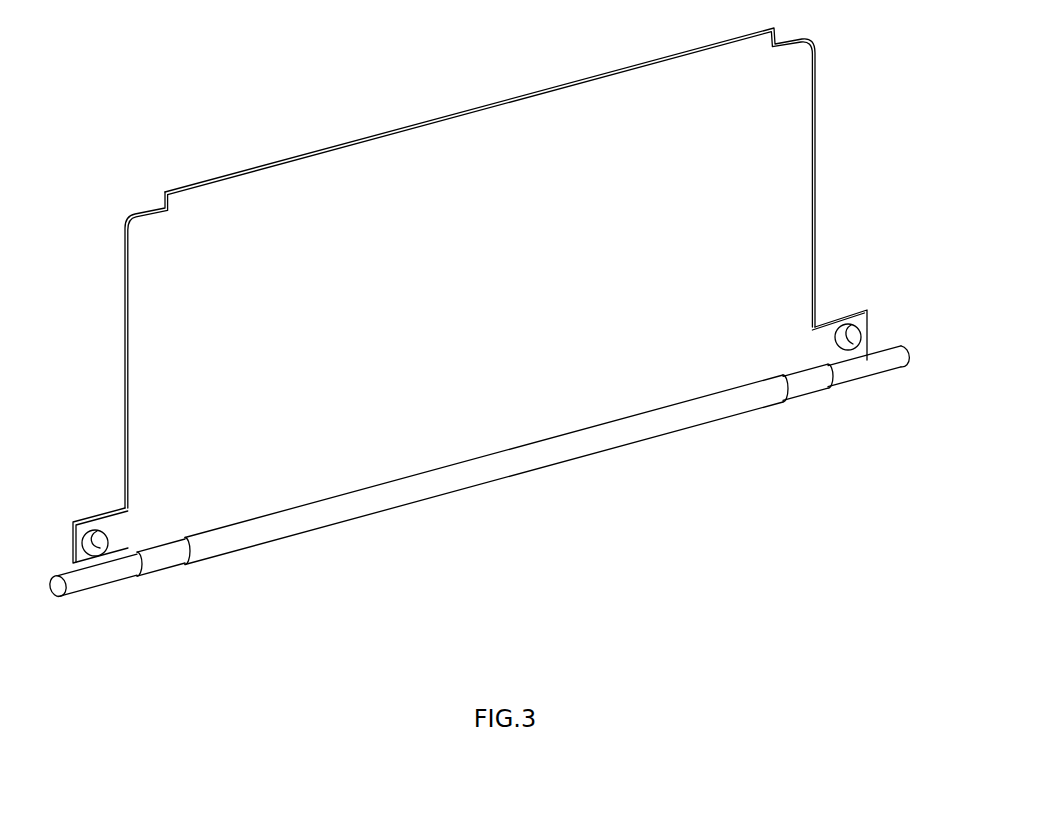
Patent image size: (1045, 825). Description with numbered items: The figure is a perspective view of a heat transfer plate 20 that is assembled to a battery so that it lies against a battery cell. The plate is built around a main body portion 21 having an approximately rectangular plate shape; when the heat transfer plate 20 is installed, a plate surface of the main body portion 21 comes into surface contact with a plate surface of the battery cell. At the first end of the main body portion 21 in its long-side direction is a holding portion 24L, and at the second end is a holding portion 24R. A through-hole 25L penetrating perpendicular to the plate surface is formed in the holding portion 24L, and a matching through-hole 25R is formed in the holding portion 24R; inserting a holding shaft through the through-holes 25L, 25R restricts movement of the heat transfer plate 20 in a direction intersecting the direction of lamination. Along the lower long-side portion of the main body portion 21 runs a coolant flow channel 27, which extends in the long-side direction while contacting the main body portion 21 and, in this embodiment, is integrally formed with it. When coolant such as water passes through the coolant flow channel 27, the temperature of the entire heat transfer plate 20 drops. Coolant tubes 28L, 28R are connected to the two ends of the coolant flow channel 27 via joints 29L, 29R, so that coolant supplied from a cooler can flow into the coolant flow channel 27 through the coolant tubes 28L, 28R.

The heat transfer plate 20 is at (469, 328).
The main body portion 21 is at (200, 206).
The holding portion 24L is at (98, 540).
The holding portion 24R is at (841, 335).
The through-hole 25L is at (101, 556).
The through-hole 25R is at (847, 343).
The coolant flow channel 27 is at (485, 518).
The coolant tube 28L is at (62, 590).
The coolant tube 28R is at (896, 362).
The joint 29L is at (165, 562).
The joint 29R is at (808, 387).